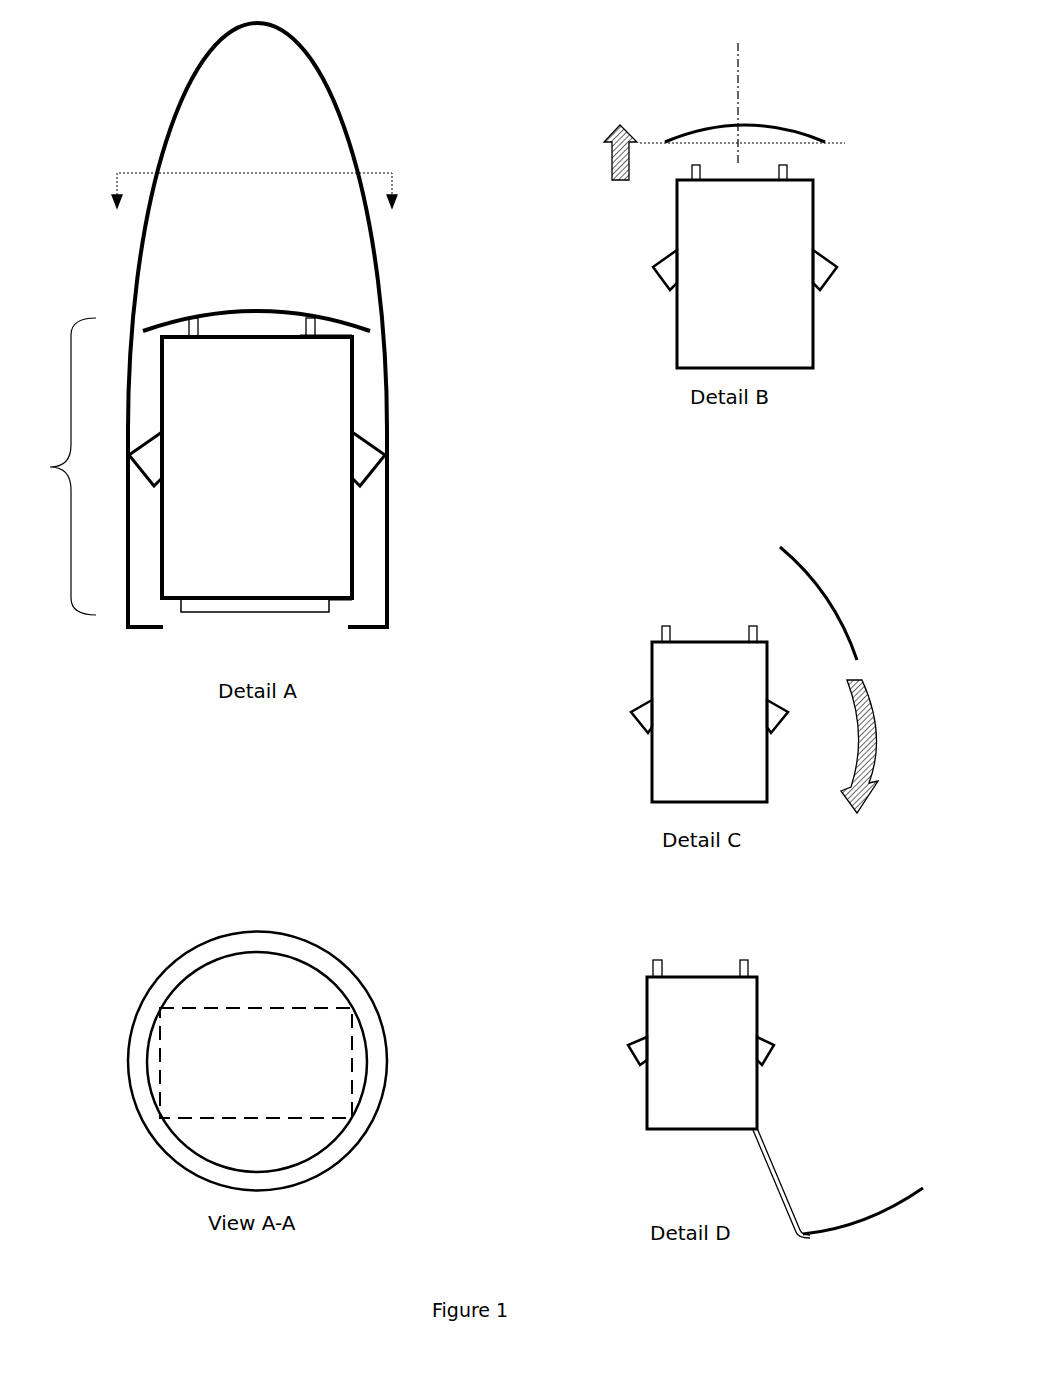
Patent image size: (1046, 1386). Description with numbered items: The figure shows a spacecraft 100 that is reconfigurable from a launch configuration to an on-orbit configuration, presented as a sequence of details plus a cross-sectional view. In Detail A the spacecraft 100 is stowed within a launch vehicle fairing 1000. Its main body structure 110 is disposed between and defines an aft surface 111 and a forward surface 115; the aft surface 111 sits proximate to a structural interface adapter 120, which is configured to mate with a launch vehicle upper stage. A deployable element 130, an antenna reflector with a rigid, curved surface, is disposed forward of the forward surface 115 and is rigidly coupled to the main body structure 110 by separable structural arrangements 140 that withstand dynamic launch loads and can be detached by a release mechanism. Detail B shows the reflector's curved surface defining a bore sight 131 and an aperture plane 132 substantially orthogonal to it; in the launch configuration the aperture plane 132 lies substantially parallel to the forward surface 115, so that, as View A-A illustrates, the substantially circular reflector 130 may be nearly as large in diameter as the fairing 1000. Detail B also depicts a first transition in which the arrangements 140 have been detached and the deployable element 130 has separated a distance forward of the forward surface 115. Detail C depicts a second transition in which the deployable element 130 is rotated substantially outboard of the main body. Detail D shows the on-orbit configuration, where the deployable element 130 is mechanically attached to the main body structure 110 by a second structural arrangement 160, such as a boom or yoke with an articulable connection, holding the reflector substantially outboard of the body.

The launch vehicle fairing 1000 is at (342, 112).
The spacecraft 100 is at (681, 65).
The main body structure 110 is at (320, 383).
The aft surface 111 is at (338, 602).
The forward surface 115 is at (330, 333).
The structural interface adapter 120 is at (253, 614).
The deployable element 130 is at (160, 325).
The bore sight 131 is at (745, 70).
The aperture plane 132 is at (795, 146).
The structural arrangement 140 is at (223, 312).
The second structural arrangement 160 is at (767, 1162).